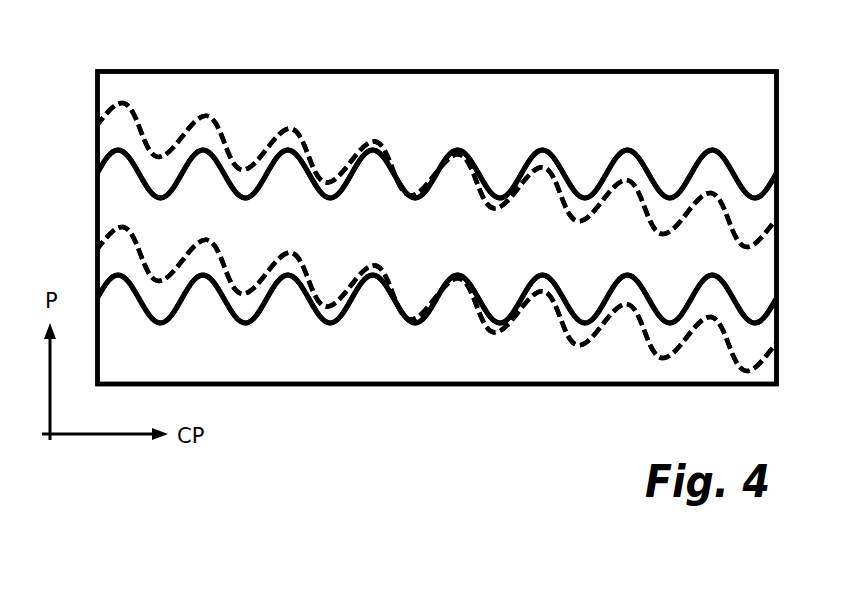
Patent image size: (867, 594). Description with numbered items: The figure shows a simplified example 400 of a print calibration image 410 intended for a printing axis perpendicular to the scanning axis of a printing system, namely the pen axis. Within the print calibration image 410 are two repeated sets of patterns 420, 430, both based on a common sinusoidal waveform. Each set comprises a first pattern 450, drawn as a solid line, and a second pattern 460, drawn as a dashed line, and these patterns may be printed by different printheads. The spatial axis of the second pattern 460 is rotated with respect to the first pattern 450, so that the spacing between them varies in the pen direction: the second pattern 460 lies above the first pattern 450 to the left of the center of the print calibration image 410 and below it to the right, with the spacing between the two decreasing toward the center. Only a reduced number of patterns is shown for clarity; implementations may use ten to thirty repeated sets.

The simplified example 400 is at (140, 46).
The print calibration image 410 is at (512, 387).
The repeated set of patterns 420 is at (498, 128).
The repeated set of patterns 430 is at (380, 338).
The first pattern 450 is at (415, 236).
The second pattern 460 is at (413, 233).